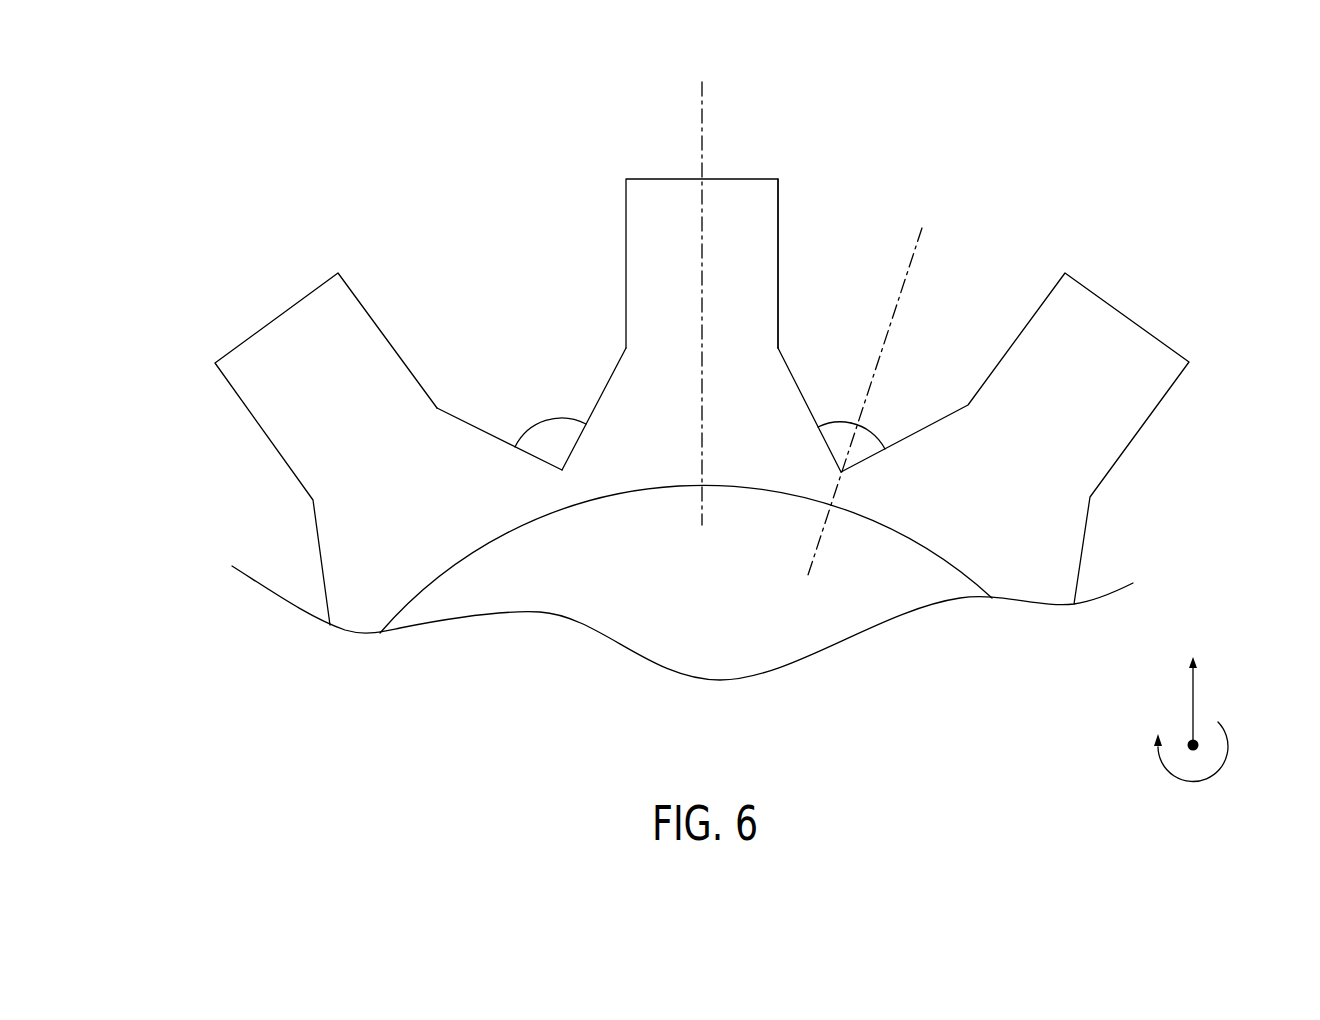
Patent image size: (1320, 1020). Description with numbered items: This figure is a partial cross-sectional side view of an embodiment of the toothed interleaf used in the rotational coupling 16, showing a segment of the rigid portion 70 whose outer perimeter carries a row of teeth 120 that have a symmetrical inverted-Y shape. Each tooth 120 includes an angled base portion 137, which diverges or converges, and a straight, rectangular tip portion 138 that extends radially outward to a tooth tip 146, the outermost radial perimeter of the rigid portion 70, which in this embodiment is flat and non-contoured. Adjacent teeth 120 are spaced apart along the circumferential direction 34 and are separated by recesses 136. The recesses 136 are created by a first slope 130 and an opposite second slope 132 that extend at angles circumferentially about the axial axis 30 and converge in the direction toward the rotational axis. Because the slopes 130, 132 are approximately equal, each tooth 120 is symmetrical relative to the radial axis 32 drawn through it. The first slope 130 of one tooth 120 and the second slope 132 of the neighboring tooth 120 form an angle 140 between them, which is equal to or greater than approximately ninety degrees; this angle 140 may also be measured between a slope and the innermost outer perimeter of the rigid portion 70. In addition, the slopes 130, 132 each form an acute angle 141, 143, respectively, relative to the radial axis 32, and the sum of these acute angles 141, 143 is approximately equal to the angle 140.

The rotational coupling 16 is at (937, 113).
The axial axis or direction 30 is at (1188, 740).
The radial axis or direction 32 is at (703, 135).
The circumferential axis or direction 34 is at (1205, 781).
The rigid portion 70 is at (248, 141).
The tooth 120 is at (757, 232).
The first slope 130 is at (496, 437).
The second slope 132 is at (592, 409).
The recess 136 is at (458, 172).
The angled base portion 137 is at (810, 408).
The straight tip portion 138 is at (778, 230).
The angle 140 is at (537, 420).
The acute angle 141 is at (841, 423).
The acute angle 143 is at (879, 430).
The tooth tip 146 is at (1110, 293).